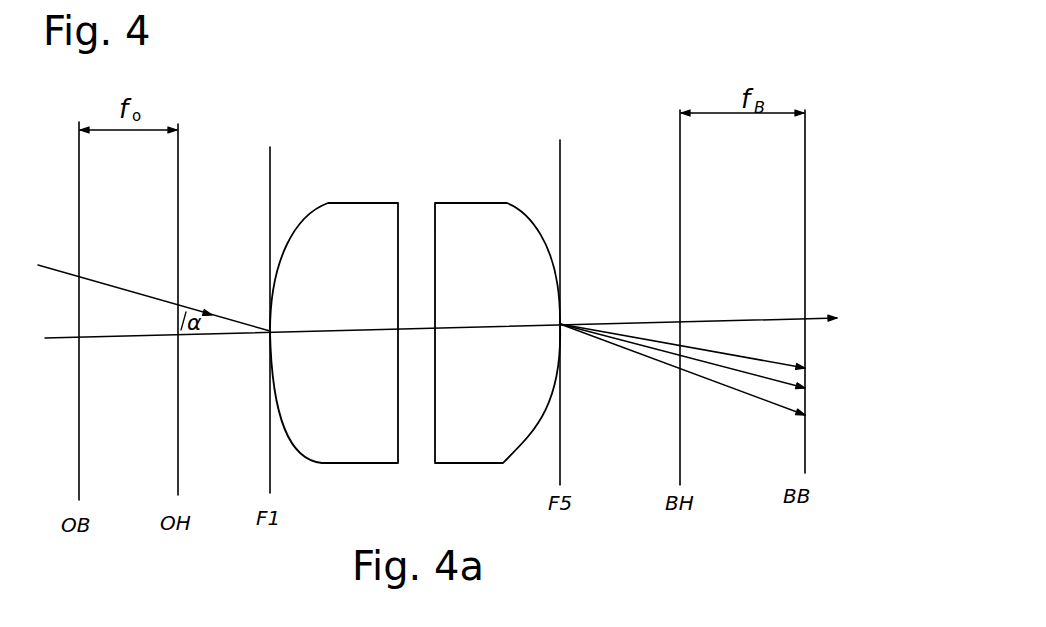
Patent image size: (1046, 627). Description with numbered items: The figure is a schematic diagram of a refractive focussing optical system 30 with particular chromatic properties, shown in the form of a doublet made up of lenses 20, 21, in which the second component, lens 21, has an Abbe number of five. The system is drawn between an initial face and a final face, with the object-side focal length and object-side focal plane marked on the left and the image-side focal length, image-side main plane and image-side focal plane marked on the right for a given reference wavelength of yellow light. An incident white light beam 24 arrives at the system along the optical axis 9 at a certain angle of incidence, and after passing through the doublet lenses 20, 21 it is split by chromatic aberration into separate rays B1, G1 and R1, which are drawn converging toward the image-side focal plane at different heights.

The optical axis 9 is at (137, 337).
The doublet lens 20 is at (354, 203).
The doublet lens 21 is at (473, 203).
The incident white light beam 24 is at (118, 288).
The focussing optical system 30 is at (415, 280).
The blue image ray B1 is at (760, 362).
The green image ray G1 is at (785, 385).
The red image ray R1 is at (776, 418).